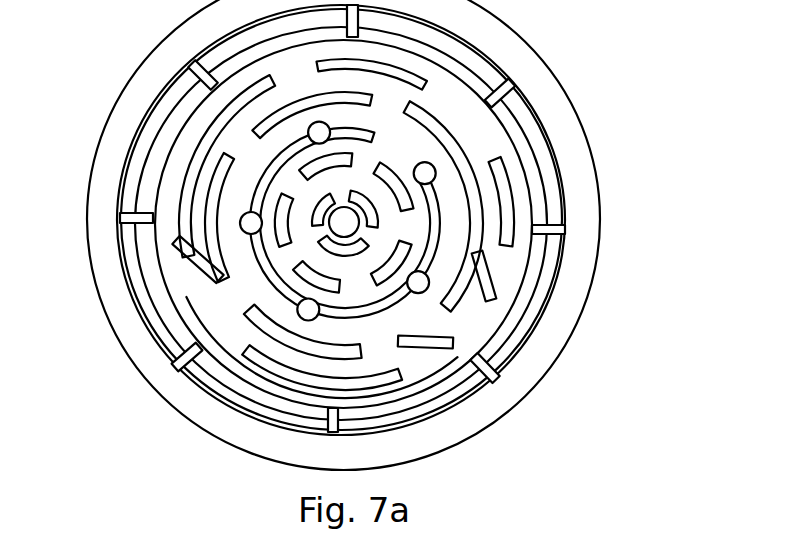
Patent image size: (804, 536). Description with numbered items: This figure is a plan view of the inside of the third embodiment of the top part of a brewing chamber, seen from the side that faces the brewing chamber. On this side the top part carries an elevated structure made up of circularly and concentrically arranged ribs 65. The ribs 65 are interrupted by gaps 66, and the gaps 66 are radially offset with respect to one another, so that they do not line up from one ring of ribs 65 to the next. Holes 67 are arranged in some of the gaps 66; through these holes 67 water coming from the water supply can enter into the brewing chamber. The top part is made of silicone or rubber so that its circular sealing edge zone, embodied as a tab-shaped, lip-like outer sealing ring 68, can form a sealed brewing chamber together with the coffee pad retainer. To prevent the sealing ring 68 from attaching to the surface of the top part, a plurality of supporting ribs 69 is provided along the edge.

The gaps 66 is at (369, 166).
The outer sealing ring 68 is at (592, 158).
The ribs 65 is at (437, 240).
The holes 67 is at (298, 304).
The supporting ribs 69 is at (328, 432).